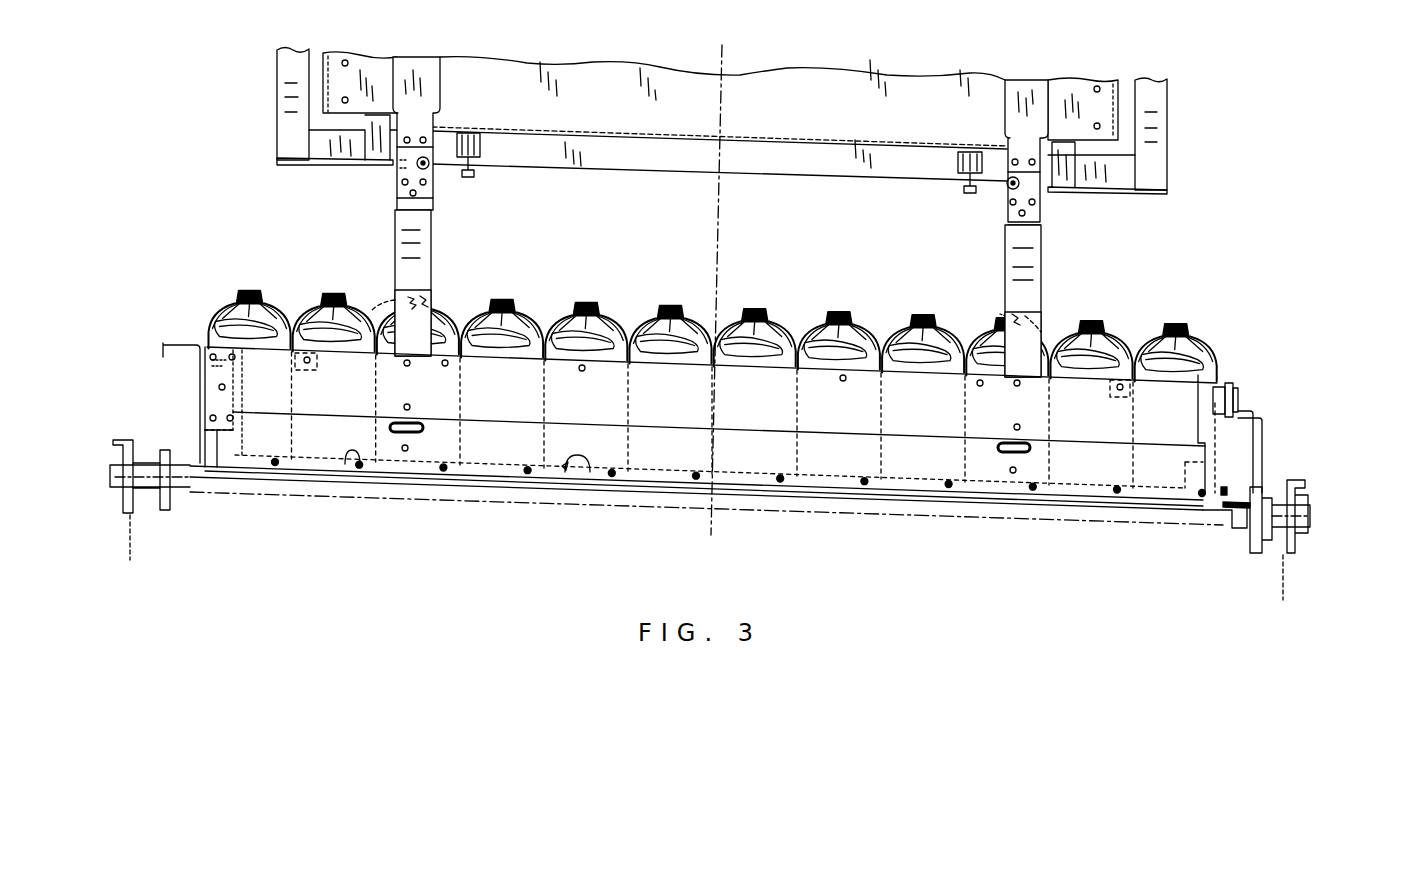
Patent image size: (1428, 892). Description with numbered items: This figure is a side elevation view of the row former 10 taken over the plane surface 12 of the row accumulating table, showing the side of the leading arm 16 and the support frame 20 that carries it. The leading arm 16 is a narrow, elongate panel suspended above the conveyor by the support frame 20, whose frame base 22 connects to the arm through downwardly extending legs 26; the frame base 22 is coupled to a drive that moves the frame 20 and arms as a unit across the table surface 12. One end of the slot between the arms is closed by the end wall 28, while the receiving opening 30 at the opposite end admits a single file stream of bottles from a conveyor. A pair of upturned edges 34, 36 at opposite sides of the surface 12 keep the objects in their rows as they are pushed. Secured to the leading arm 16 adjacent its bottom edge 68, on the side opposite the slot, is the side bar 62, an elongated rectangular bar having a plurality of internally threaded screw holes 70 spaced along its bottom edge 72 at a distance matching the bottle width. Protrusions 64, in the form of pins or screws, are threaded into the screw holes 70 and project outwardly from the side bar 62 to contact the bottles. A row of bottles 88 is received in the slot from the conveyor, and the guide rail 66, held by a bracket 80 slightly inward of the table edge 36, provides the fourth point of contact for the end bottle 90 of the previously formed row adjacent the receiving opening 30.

The row former 10 is at (1196, 252).
The plane surface 12 is at (586, 470).
The leading arm 16 is at (343, 290).
The support frame 20 is at (1190, 104).
The frame base 22 is at (763, 158).
The legs 26 is at (428, 249).
The end wall 28 is at (197, 397).
The receiving opening 30 is at (1242, 363).
The upturned edge 34 is at (197, 453).
The upturned edge 36 is at (1225, 488).
The side bar 62 is at (328, 433).
The protrusions 64 is at (350, 460).
The guide rail 66 is at (1238, 400).
The bottom edge 68 is at (743, 480).
The screw holes 70 is at (423, 487).
The bottom edge 72 is at (657, 483).
The bracket 80 is at (1262, 450).
The second row of bottles 88 is at (1204, 327).
The bottle 90 is at (1219, 343).